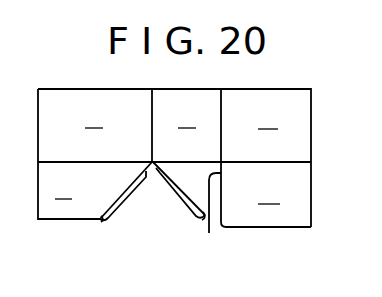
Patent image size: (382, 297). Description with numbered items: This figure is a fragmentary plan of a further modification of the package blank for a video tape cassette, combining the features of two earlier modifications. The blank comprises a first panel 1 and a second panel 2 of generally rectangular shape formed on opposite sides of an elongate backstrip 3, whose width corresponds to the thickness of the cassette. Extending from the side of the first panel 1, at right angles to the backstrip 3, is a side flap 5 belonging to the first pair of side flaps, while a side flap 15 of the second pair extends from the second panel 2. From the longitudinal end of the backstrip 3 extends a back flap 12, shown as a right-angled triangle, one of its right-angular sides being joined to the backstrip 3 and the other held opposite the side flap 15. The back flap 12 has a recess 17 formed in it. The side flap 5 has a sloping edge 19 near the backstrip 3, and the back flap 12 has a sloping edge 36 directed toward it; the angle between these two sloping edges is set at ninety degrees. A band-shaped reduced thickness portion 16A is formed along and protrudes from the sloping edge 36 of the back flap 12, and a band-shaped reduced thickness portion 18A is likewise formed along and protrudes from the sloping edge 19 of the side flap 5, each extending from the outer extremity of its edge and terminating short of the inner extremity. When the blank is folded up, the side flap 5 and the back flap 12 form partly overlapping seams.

The first panel 1 is at (94, 117).
The second panel 2 is at (268, 118).
The backstrip 3 is at (187, 117).
The side flap 5 is at (63, 188).
The side flap 15 is at (269, 192).
The back flap 12 is at (182, 176).
The reduced thickness portion 16A is at (185, 197).
The recess 17 is at (210, 193).
The reduced thickness portion 18A is at (121, 206).
The sloping edge 19 is at (102, 221).
The sloping edge 36 is at (204, 217).